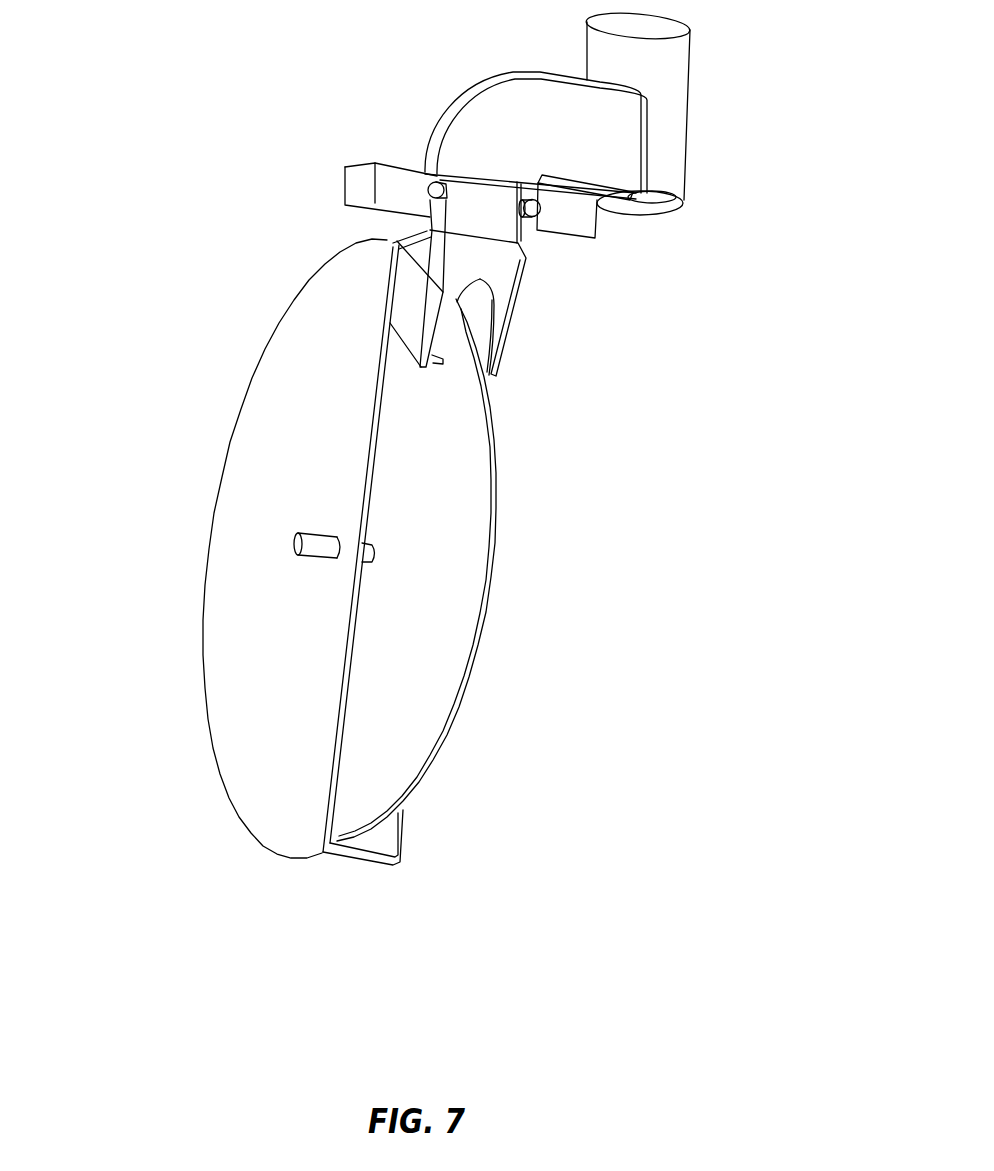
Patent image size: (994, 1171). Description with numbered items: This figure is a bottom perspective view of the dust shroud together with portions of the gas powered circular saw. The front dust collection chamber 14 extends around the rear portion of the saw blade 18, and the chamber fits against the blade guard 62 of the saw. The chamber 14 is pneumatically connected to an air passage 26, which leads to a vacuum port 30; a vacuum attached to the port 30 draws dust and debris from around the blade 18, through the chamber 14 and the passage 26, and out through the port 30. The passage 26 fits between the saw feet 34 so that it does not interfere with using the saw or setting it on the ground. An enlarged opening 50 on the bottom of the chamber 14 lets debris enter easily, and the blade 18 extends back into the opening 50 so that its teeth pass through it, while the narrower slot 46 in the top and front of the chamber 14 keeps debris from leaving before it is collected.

The dust collection chamber 14 is at (505, 270).
The saw blade 18 is at (418, 693).
The air passage 26 is at (615, 152).
The vacuum port 30 is at (667, 63).
The feet 34 is at (397, 190).
The slot 46 is at (458, 378).
The enlarged opening 50 is at (500, 309).
The blade guard 62 is at (232, 710).